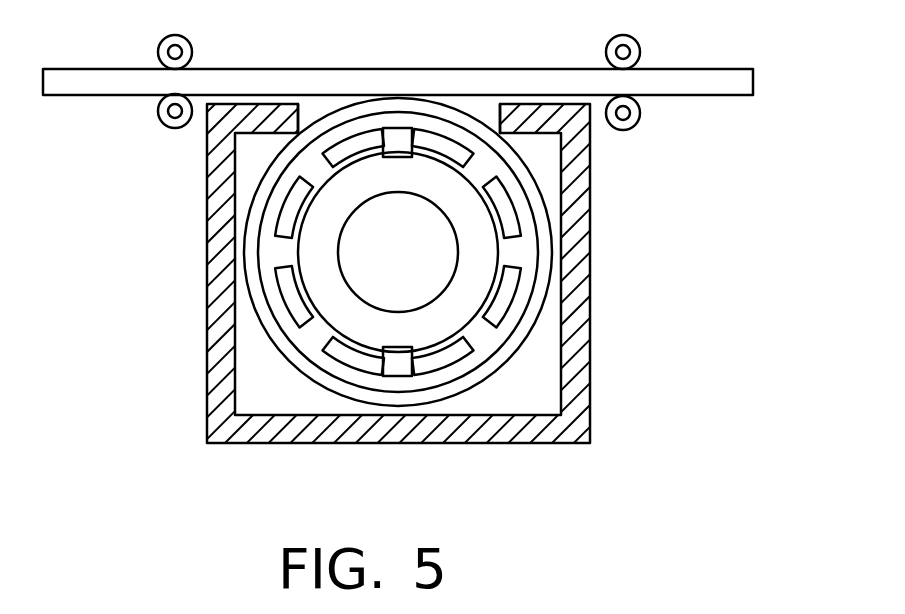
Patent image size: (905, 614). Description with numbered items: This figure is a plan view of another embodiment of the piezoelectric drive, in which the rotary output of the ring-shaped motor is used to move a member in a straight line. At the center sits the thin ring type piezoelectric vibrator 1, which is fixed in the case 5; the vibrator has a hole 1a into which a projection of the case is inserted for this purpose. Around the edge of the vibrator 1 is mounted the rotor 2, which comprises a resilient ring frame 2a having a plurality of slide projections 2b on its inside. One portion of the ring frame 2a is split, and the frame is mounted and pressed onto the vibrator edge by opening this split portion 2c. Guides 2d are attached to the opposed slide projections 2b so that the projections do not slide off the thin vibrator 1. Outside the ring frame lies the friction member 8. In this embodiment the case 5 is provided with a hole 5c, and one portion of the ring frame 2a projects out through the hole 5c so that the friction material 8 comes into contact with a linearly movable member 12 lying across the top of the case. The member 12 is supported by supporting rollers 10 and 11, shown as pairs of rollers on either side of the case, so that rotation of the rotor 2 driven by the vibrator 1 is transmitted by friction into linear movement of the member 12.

The ring type piezoelectric vibrator 1 is at (298, 253).
The hole 1a is at (457, 277).
The rotor 2 is at (391, 271).
The resilient ring frame 2a is at (275, 197).
The projections 2b is at (518, 247).
The split portion 2c is at (350, 373).
The guides 2d is at (397, 138).
The case 5 is at (216, 348).
The hole 5c is at (321, 107).
The friction member 8 is at (513, 343).
The supporting roller 10 is at (164, 101).
The supporting roller 11 is at (637, 106).
The linearly movable member 12 is at (372, 82).